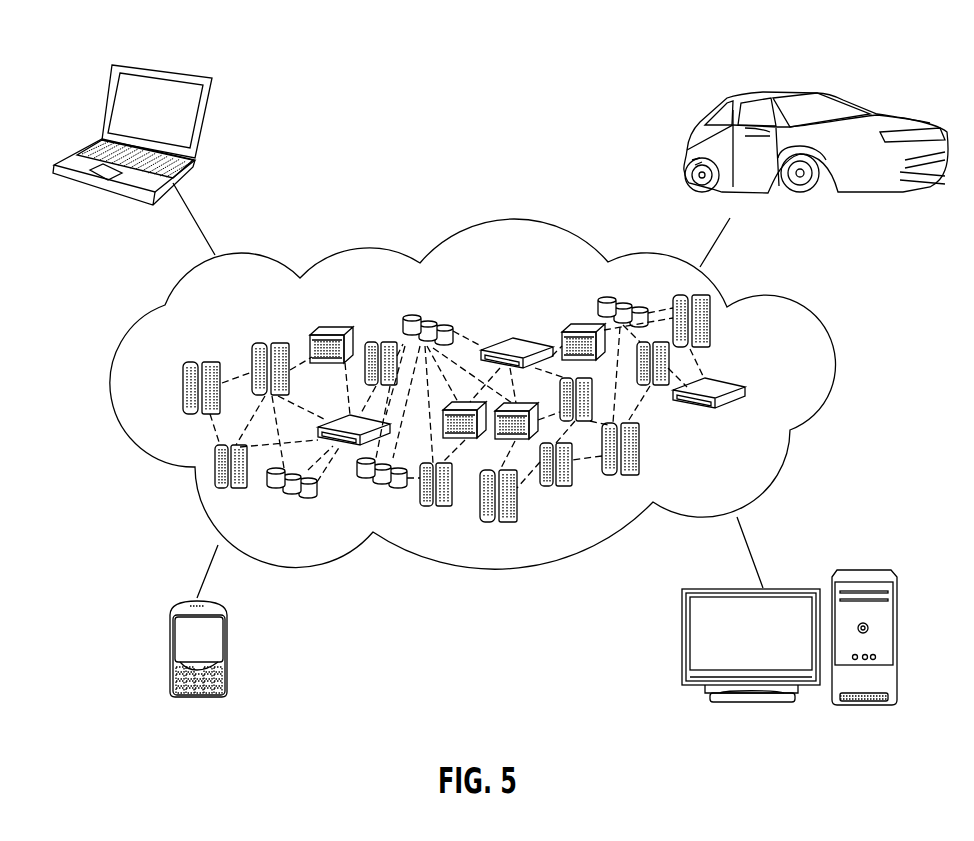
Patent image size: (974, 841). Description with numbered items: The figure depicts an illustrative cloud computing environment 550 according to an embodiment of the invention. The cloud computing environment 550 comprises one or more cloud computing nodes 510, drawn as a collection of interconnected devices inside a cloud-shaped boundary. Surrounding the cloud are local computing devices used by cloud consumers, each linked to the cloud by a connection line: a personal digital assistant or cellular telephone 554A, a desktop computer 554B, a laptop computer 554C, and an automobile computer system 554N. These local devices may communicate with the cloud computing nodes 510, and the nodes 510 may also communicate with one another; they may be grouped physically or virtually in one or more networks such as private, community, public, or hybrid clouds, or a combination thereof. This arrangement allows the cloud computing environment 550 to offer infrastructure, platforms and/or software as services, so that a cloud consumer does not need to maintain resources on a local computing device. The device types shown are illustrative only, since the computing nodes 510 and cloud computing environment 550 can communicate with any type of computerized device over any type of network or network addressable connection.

The cloud computing environment 550 is at (495, 41).
The cloud computing nodes 510 is at (779, 388).
The personal digital assistant or cellular telephone 554A is at (170, 652).
The desktop computer 554B is at (867, 565).
The laptop computer 554C is at (203, 123).
The automobile computer system 554N is at (690, 130).